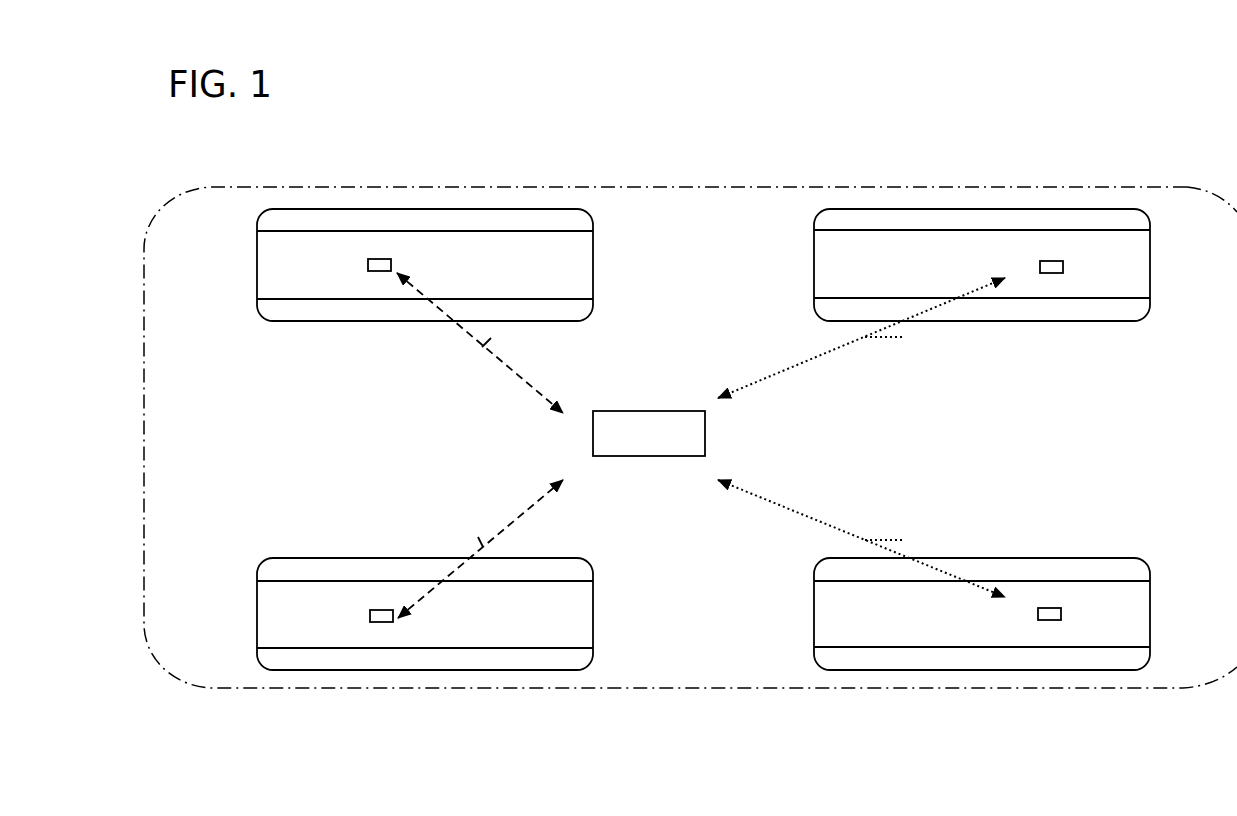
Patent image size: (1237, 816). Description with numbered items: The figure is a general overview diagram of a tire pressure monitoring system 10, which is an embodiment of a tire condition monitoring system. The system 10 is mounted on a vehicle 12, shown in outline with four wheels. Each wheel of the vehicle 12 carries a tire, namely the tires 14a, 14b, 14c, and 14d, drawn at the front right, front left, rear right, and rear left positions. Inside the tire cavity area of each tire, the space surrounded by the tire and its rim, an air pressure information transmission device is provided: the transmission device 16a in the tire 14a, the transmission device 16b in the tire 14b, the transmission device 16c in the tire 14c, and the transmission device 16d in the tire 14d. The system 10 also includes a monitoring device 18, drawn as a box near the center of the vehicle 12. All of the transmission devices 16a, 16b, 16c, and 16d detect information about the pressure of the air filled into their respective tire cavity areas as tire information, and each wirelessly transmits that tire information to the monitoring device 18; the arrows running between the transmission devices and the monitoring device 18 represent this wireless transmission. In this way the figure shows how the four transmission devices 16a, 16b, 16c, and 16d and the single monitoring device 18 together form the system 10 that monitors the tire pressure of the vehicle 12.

The tire pressure monitoring system 10 is at (618, 100).
The vehicle 12 is at (645, 186).
The tire 14a is at (421, 209).
The tire 14b is at (425, 671).
The tire 14c is at (995, 209).
The tire 14d is at (973, 669).
The air pressure information transmission device 16a is at (379, 259).
The air pressure information transmission device 16b is at (383, 622).
The air pressure information transmission device 16c is at (1053, 261).
The air pressure information transmission device 16d is at (1050, 622).
The monitoring device 18 is at (648, 456).